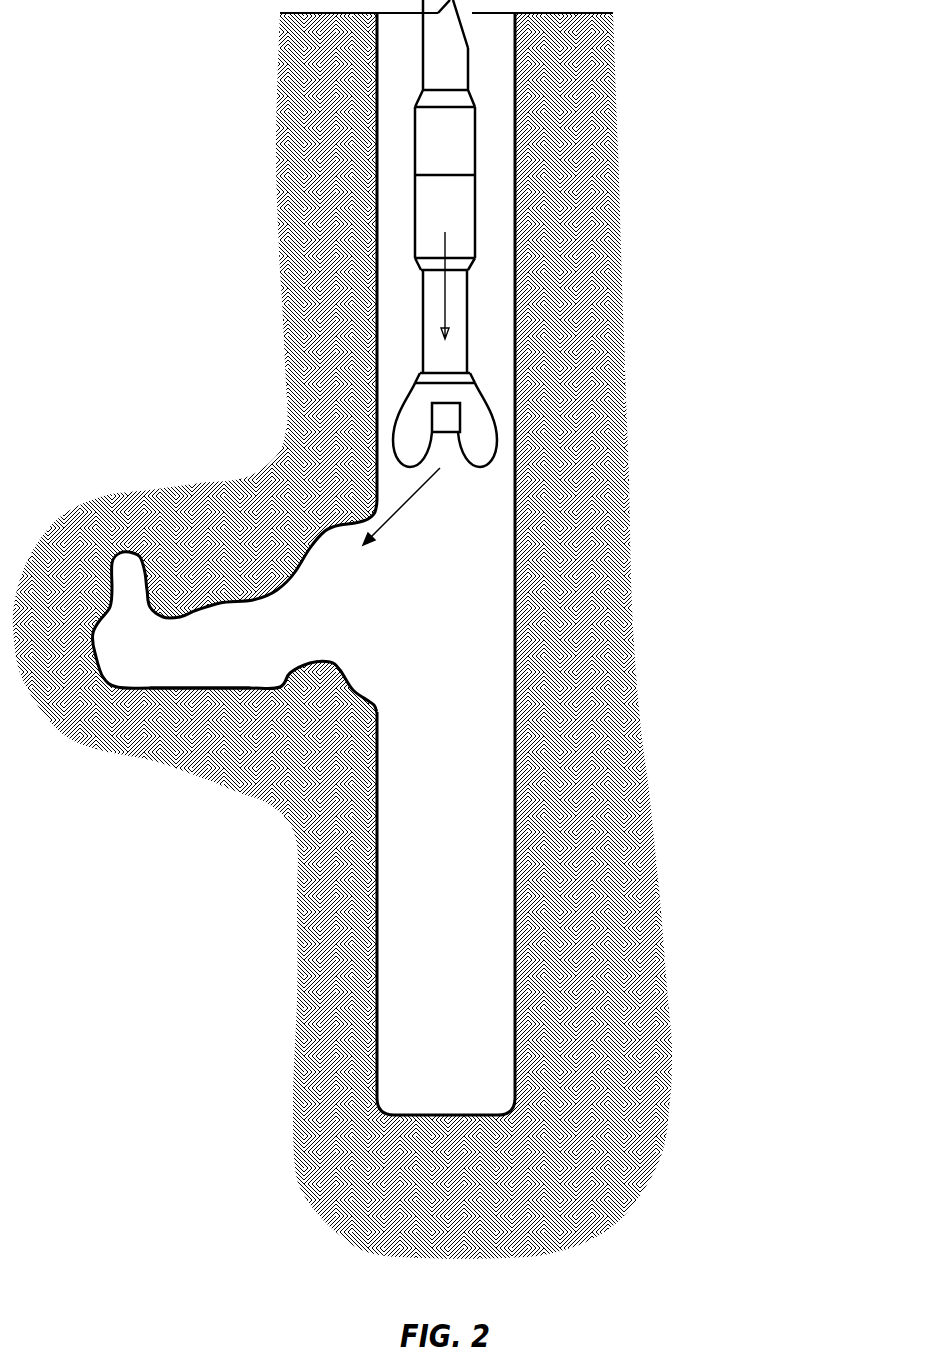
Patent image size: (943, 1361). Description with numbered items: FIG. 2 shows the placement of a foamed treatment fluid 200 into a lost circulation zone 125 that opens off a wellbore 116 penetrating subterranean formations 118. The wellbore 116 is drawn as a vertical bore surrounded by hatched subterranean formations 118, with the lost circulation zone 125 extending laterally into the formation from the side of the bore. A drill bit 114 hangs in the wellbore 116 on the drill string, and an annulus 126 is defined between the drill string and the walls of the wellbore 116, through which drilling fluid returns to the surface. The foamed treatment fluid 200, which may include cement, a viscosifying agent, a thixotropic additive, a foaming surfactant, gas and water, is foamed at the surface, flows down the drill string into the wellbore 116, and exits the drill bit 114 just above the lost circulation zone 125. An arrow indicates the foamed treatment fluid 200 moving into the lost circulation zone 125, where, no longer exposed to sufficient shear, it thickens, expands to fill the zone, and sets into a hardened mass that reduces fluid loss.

The wellbore 116 is at (518, 110).
The annulus 126 is at (495, 290).
The subterranean formations 118 is at (235, 424).
The lost circulation zone 125 is at (223, 697).
The drill bit 114 is at (482, 446).
The foamed treatment fluid 200 is at (417, 490).